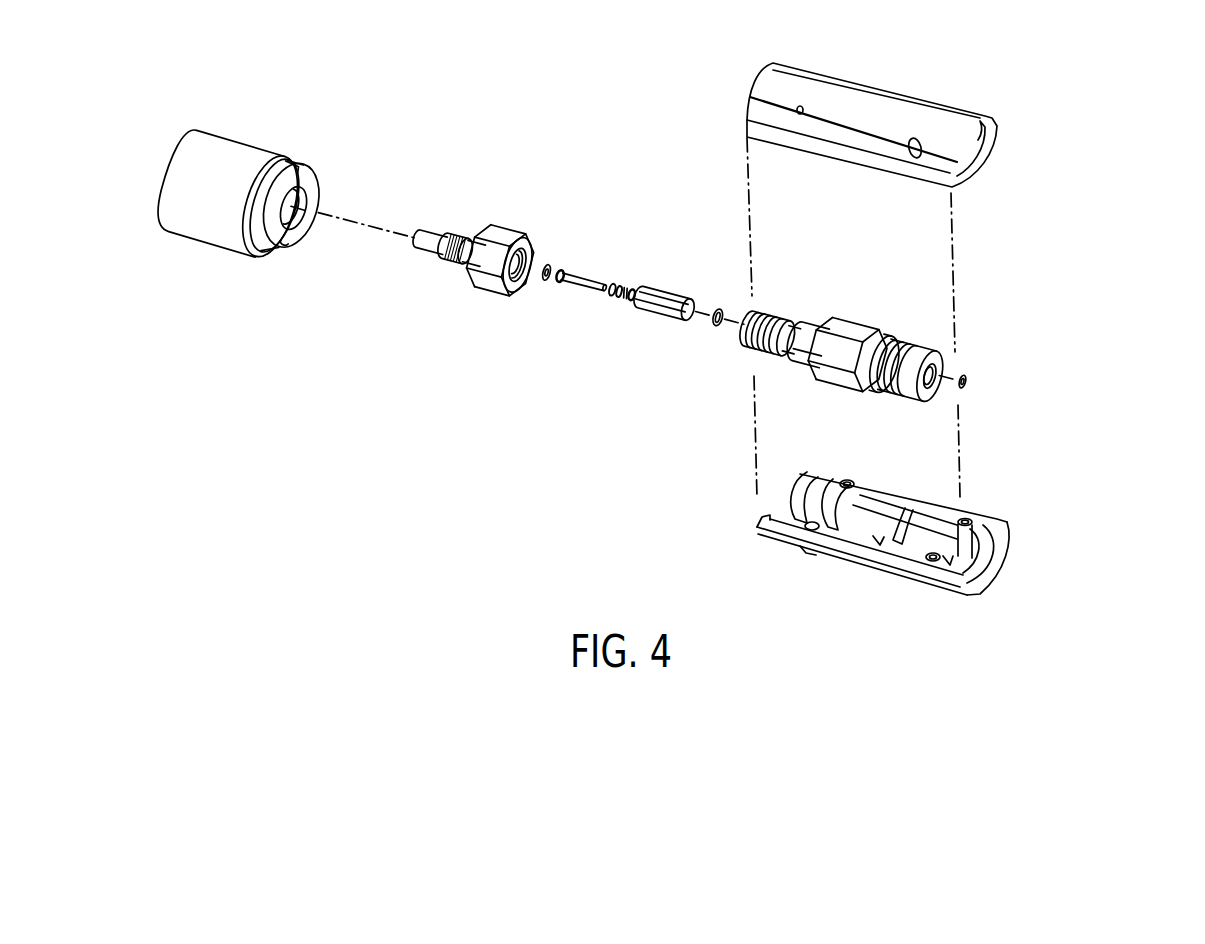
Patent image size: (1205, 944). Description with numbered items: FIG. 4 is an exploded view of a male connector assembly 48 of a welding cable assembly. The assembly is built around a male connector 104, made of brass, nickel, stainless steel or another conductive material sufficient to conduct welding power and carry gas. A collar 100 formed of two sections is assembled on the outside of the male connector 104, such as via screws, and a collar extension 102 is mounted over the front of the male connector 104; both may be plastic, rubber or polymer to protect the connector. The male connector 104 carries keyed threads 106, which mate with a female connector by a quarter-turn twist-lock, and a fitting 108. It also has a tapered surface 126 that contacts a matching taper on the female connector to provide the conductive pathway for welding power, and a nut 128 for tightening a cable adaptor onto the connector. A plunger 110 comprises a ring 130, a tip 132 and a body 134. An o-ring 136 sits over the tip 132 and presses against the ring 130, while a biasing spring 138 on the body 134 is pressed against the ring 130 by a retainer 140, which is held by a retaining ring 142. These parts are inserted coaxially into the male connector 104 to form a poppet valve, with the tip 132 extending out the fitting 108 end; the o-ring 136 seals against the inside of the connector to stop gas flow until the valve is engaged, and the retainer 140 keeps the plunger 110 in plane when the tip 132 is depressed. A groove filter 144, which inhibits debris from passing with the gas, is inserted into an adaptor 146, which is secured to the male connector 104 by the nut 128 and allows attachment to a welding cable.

The male connector assembly 48 is at (1078, 606).
The collar 100 is at (928, 103).
The collar extension 102 is at (205, 232).
The male connector 104 is at (480, 314).
The keyed threads 106 is at (455, 237).
The fitting 108 is at (434, 256).
The plunger 110 is at (587, 284).
The tapered surface 126 is at (487, 237).
The nut 128 is at (512, 232).
The ring 130 is at (548, 270).
The tip 132 is at (562, 284).
The body 134 is at (596, 298).
The o-ring 136 is at (538, 291).
The biasing spring 138 is at (626, 302).
The retainer 140 is at (679, 298).
The retaining ring 142 is at (714, 329).
The groove filter 144 is at (968, 376).
The adaptor 146 is at (862, 333).